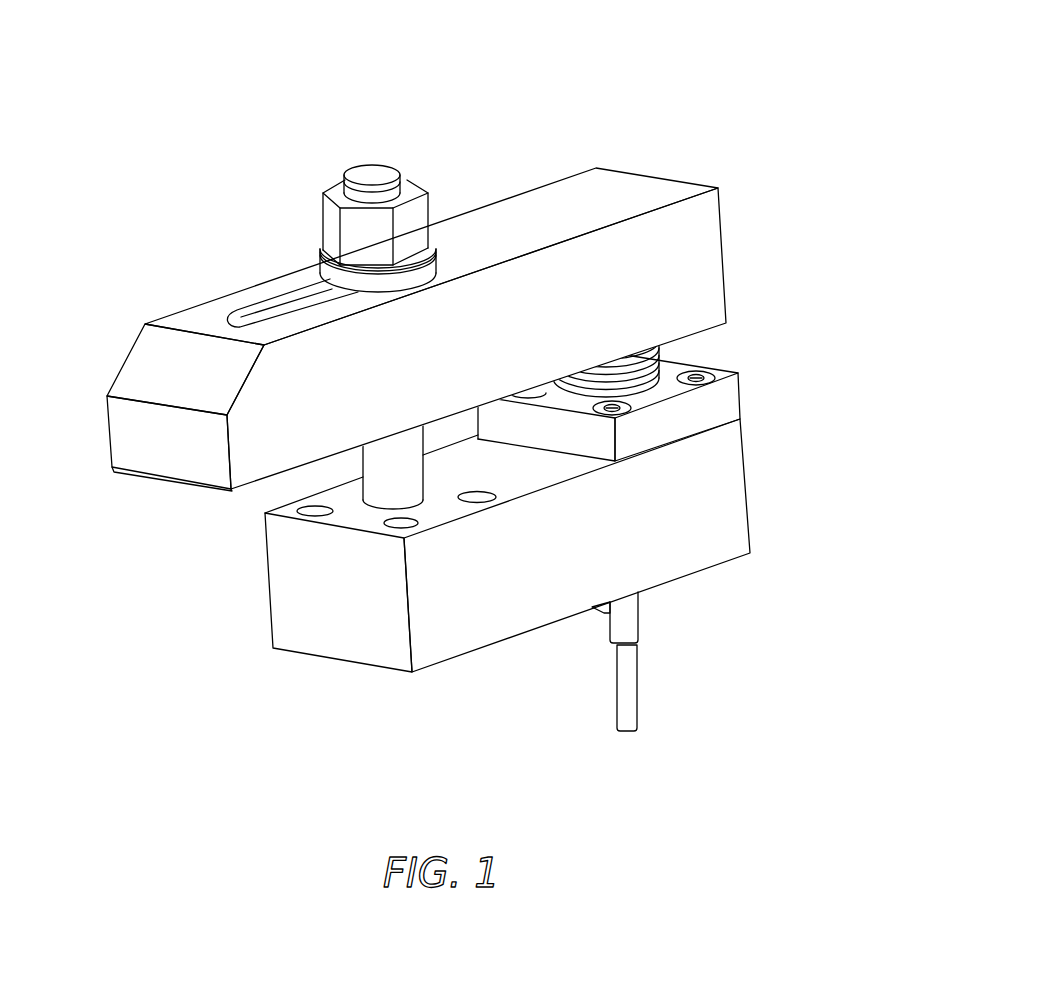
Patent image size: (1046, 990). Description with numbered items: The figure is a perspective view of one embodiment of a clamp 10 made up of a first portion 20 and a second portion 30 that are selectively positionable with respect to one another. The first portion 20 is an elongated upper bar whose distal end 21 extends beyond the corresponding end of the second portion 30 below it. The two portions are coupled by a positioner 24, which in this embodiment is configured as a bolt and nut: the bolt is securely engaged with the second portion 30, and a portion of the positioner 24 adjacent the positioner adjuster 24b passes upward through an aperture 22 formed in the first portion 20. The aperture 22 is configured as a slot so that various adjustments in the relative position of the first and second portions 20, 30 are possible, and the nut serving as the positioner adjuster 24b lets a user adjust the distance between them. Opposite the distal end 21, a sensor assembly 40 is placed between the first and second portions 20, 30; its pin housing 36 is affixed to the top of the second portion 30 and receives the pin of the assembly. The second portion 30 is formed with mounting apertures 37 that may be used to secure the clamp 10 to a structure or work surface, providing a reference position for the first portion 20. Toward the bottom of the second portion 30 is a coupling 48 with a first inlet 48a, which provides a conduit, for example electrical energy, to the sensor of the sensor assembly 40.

The clamp 10 is at (545, 117).
The first portion 20 is at (500, 187).
The distal end 21 is at (132, 412).
The aperture 22 is at (272, 307).
The positioner 24 is at (345, 469).
The positioner adjuster 24b is at (332, 218).
The second portion 30 is at (478, 665).
The pin housing 36 is at (715, 410).
The mounting aperture 37 is at (483, 493).
The sensor assembly 40 is at (675, 355).
The coupling 48 is at (630, 622).
The first inlet 48a is at (642, 727).